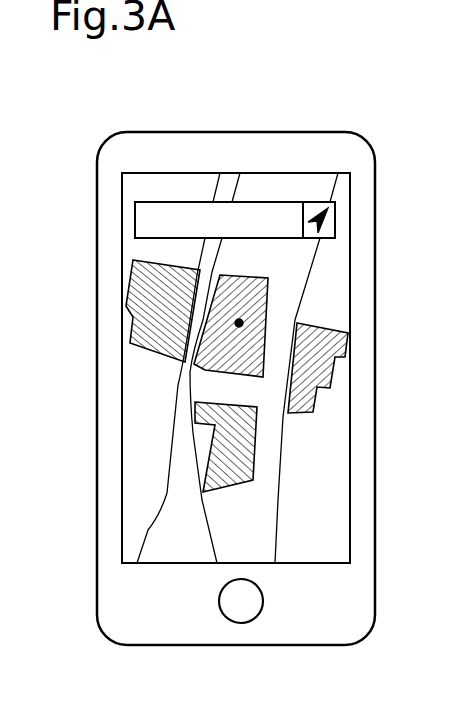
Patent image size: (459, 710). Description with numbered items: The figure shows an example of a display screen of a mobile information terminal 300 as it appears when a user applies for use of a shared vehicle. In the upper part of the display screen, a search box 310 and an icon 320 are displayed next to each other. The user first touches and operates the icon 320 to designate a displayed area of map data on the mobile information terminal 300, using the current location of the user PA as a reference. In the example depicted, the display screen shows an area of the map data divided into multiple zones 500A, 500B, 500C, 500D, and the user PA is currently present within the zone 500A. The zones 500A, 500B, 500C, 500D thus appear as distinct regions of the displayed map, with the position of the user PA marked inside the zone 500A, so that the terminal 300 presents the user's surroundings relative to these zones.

The mobile information terminal 300 is at (310, 132).
The search box 310 is at (189, 212).
The icon 320 is at (321, 202).
The zone 500A is at (268, 280).
The zone 500B is at (130, 288).
The zone 500C is at (335, 372).
The zone 500D is at (253, 443).
The user PA is at (240, 324).